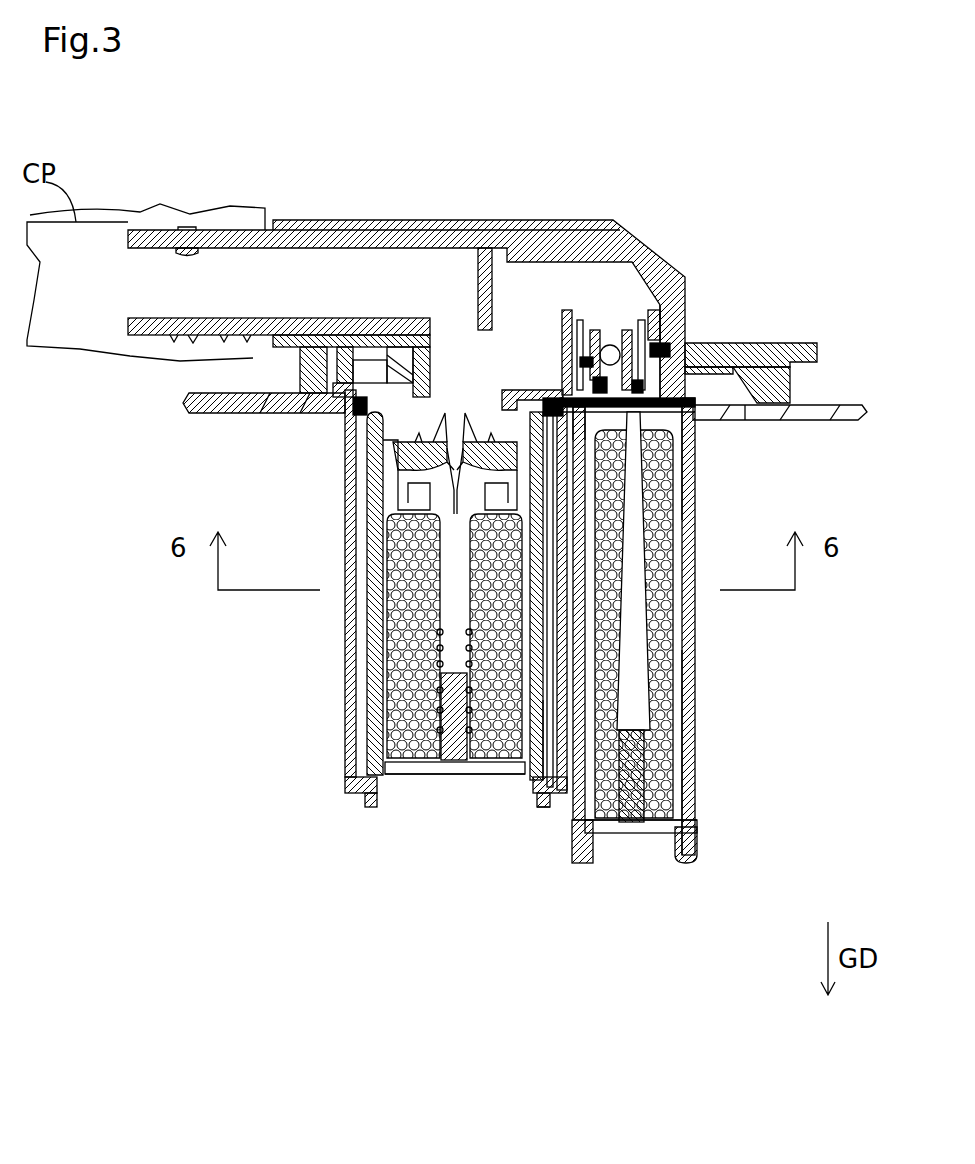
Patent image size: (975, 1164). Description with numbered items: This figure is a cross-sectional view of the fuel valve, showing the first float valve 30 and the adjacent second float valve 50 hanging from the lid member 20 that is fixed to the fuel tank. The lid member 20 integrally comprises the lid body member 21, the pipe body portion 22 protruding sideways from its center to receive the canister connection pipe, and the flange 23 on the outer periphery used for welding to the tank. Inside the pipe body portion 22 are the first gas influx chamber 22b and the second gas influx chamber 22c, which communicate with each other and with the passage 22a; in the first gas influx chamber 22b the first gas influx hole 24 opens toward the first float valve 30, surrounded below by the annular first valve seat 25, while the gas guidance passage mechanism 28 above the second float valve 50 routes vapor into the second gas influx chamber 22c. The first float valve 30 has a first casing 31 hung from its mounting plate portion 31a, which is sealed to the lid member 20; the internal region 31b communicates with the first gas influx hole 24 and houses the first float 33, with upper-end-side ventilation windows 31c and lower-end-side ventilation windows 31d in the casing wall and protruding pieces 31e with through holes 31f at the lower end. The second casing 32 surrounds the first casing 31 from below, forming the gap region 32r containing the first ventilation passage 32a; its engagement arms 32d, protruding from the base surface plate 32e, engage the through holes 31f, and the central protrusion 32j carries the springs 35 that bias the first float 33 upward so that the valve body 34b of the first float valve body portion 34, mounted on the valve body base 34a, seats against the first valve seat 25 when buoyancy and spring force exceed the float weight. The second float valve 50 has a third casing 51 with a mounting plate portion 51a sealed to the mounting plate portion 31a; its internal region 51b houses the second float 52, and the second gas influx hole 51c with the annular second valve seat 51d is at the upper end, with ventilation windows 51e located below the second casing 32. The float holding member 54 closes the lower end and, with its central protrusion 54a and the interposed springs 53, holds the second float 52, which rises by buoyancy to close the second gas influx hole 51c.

The lid member 20 is at (485, 244).
The lid body member 21 is at (560, 222).
The pipe body portion 22 is at (270, 215).
The passage 22a is at (181, 248).
The first gas influx chamber 22b is at (514, 369).
The second gas influx chamber 22c is at (627, 309).
The flange 23 is at (748, 343).
The first gas influx hole 24 is at (448, 420).
The first valve seat 25 is at (300, 393).
The gas guidance passage mechanism 28 is at (620, 337).
The first float valve 30 is at (340, 638).
The first casing 31 is at (345, 656).
The mounting plate portion 31a is at (380, 355).
The internal region 31b is at (468, 775).
The upper-end-side ventilation window 31c is at (365, 472).
The lower-end-side ventilation window 31d is at (356, 722).
The protruding piece 31e is at (540, 794).
The through hole 31f is at (528, 784).
The second casing 32 is at (380, 727).
The first ventilation passage 32a is at (372, 692).
The engagement arm 32d is at (548, 795).
The base surface plate 32e is at (505, 776).
The central protrusion 32j is at (450, 768).
The gap region 32r is at (602, 830).
The first float 33 is at (392, 608).
The first float valve body portion 34 is at (300, 426).
The valve body base 34a is at (356, 462).
The valve body 34b is at (355, 432).
The spring 35 is at (370, 806).
The second float valve 50 is at (738, 654).
The third casing 51 is at (695, 611).
The mounting plate portion 51a is at (695, 516).
The internal region 51b is at (695, 708).
The second gas influx hole 51c is at (695, 478).
The second valve seat 51d is at (695, 436).
The ventilation window 51e is at (695, 800).
The second float 52 is at (695, 662).
The spring 53 is at (695, 742).
The float holding member 54 is at (700, 858).
The central protrusion 54a is at (695, 777).